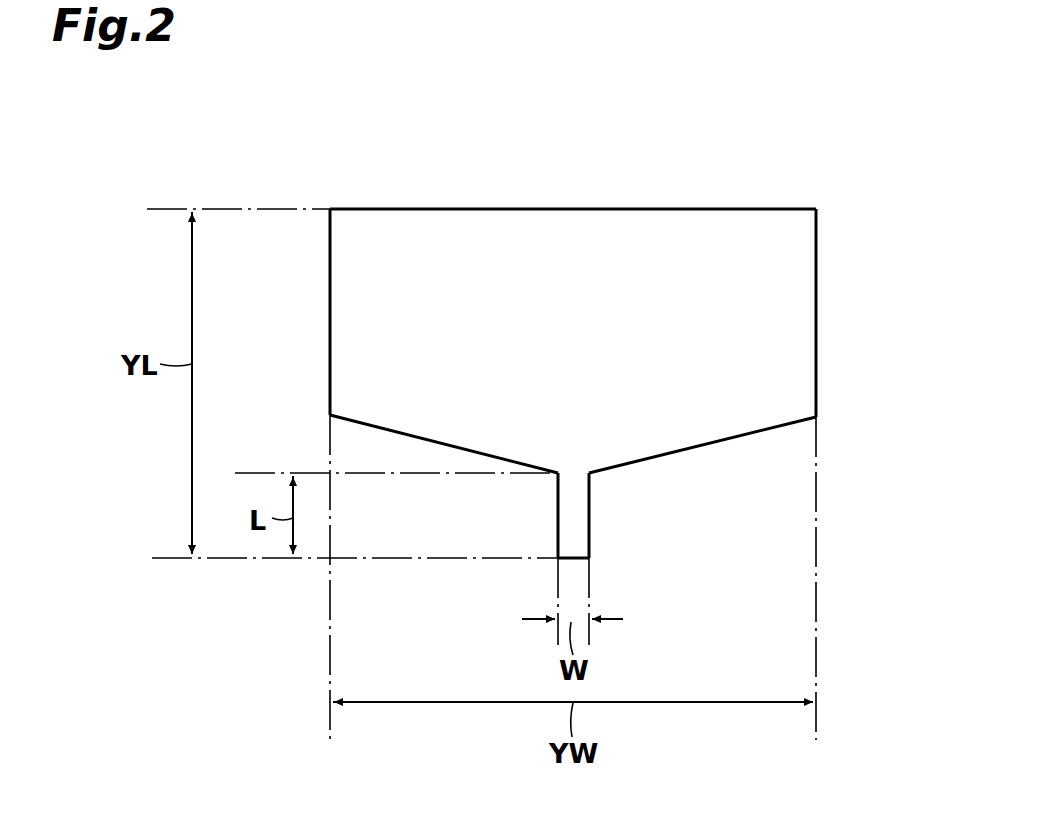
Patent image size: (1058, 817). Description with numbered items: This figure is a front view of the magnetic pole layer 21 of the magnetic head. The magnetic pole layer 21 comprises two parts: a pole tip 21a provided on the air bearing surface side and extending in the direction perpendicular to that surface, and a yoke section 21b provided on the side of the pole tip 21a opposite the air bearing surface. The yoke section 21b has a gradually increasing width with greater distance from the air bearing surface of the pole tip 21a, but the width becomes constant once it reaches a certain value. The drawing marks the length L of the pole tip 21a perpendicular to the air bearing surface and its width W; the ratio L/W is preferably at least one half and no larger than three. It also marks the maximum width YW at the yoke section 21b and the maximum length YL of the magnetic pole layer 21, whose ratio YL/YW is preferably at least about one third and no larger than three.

The magnetic pole layer 21 is at (644, 530).
The pole tip 21a is at (575, 505).
The yoke section 21b is at (676, 432).